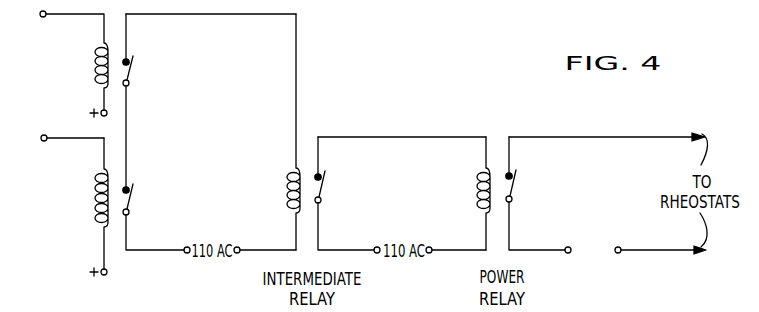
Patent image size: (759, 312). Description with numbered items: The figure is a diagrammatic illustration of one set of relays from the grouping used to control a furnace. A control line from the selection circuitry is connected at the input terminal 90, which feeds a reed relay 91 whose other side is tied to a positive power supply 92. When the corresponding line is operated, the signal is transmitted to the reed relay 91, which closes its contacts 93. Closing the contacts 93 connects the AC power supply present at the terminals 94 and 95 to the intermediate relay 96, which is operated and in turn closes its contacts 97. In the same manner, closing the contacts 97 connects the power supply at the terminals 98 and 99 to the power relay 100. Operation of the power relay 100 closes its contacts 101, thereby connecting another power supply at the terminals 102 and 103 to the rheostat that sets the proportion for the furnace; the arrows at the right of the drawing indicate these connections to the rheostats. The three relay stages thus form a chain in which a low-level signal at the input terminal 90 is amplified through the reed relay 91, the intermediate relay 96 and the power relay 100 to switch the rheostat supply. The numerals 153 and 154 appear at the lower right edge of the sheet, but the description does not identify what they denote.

The input terminal 90 is at (44, 135).
The reed relay 91 is at (92, 205).
The positive power supply 92 is at (104, 276).
The contacts 93 is at (134, 208).
The terminal 94 is at (187, 254).
The terminal 95 is at (237, 254).
The intermediate relay 96 is at (286, 205).
The contacts 97 is at (325, 201).
The terminal 98 is at (377, 254).
The terminal 99 is at (429, 254).
The power relay 100 is at (476, 205).
The contacts 101 is at (516, 200).
The terminal 102 is at (568, 254).
The terminal 103 is at (618, 254).
The rheostat lead 153 is at (692, 311).
The rheostat lead 154 is at (734, 311).